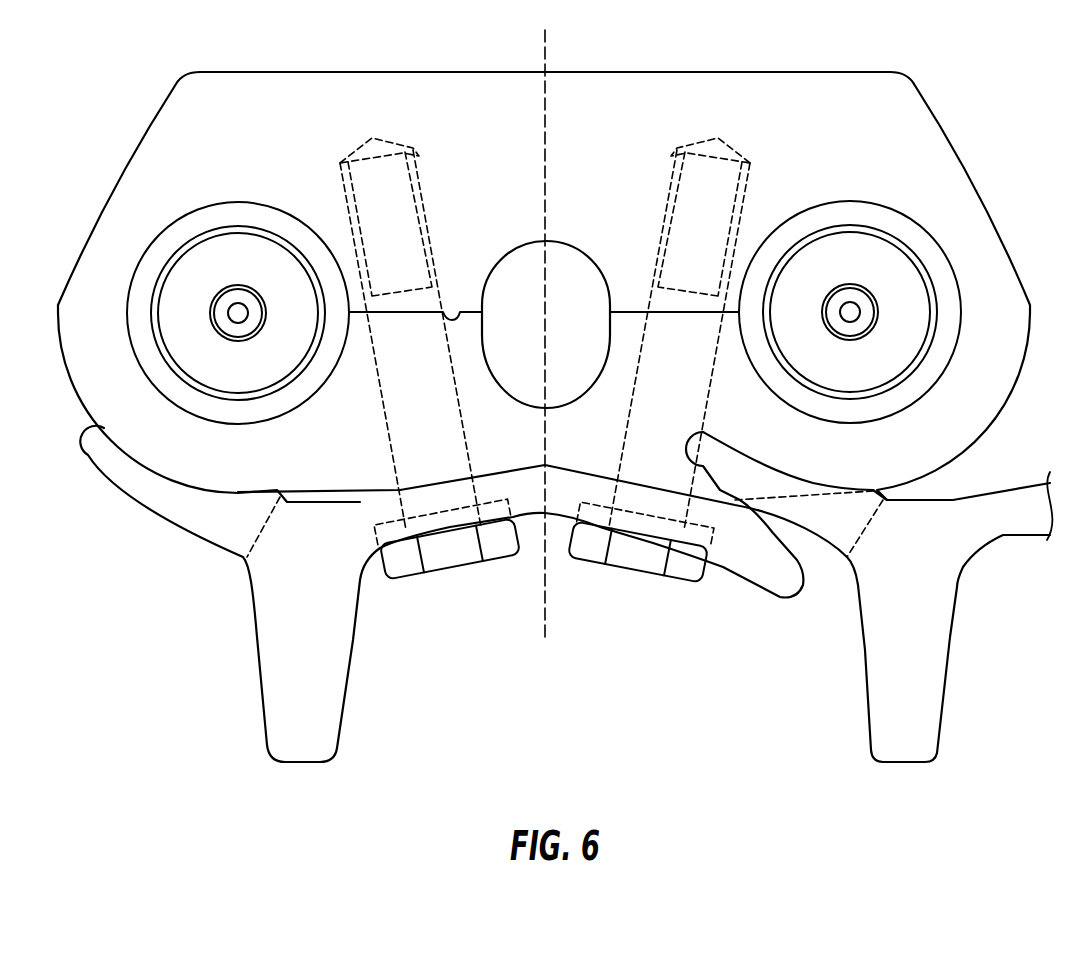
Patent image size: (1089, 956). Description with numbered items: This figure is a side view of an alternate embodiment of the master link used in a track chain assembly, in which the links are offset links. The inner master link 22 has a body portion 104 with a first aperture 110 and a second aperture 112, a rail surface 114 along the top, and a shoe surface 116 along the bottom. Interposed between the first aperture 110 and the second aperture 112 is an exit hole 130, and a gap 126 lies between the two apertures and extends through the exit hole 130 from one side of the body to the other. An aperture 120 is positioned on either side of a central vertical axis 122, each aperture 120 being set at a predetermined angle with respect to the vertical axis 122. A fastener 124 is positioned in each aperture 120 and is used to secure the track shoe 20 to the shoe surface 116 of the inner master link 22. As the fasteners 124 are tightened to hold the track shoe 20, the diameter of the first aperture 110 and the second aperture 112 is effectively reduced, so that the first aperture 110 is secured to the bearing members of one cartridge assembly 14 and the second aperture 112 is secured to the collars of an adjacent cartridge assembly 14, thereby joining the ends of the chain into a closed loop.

The cartridge assembly 14 is at (968, 337).
The track shoe 20 is at (257, 662).
The inner master link 22 is at (947, 132).
The body portion 104 is at (847, 92).
The first aperture 110 is at (244, 202).
The second aperture 112 is at (840, 202).
The rail surface 114 is at (730, 68).
The shoe surface 116 is at (517, 472).
The aperture 120 is at (393, 427).
The vertical axis 122 is at (548, 66).
The fastener 124 is at (437, 573).
The gap 126 is at (460, 312).
The exit hole 130 is at (570, 250).